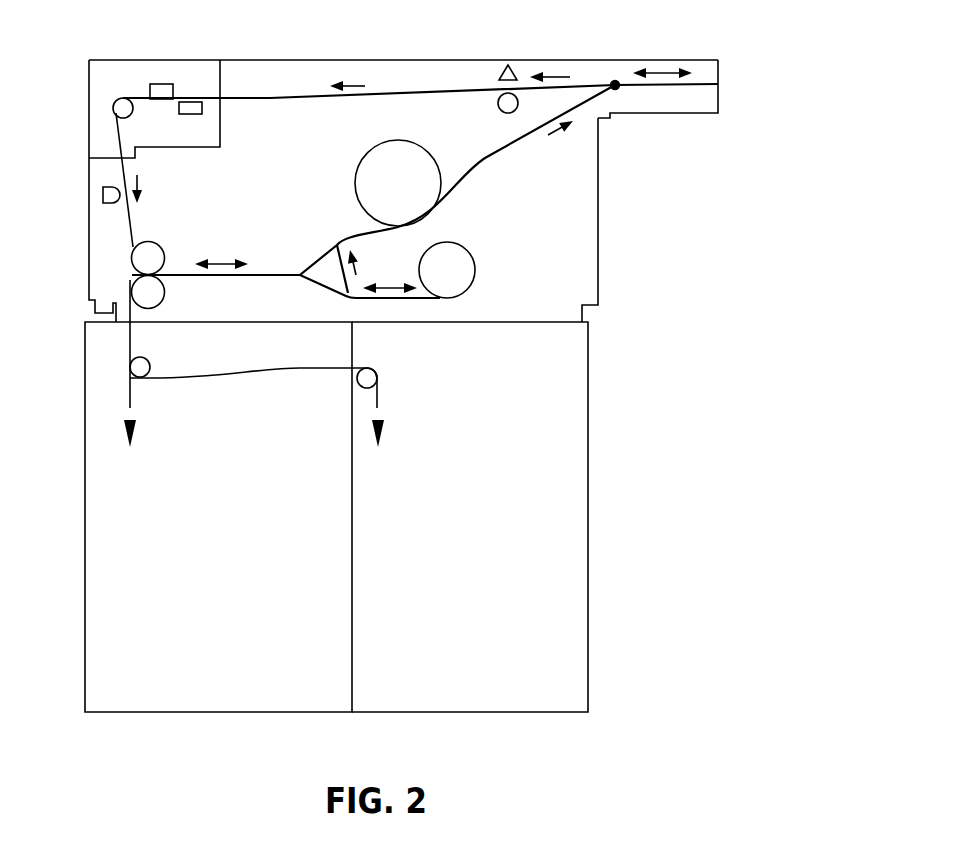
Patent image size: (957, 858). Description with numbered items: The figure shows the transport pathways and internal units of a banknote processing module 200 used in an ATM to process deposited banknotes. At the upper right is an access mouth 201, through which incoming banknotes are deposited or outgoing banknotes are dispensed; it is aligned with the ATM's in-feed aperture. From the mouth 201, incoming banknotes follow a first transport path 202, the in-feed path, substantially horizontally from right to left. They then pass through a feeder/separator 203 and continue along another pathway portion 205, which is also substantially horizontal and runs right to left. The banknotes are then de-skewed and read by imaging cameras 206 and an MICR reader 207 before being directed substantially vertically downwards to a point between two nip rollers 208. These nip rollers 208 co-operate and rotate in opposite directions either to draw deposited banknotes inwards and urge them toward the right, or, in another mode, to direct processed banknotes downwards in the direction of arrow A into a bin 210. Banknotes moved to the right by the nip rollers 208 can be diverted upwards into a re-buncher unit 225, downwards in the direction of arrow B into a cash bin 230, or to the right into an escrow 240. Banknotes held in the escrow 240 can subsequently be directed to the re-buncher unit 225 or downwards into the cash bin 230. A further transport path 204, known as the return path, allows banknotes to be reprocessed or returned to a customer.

The banknote processing module 200 is at (648, 414).
The access mouth 201 is at (735, 79).
The first transport path 202 is at (590, 84).
The feeder/separator 203 is at (500, 72).
The further transport path 204 is at (507, 146).
The pathway portion 205 is at (272, 98).
The imaging cameras 206 is at (163, 84).
The MICR reader 207 is at (103, 195).
The nip rollers 208 is at (148, 247).
The bin 210 is at (226, 655).
The re-buncher unit 225 is at (367, 151).
The cash bin 230 is at (484, 655).
The escrow 240 is at (472, 248).